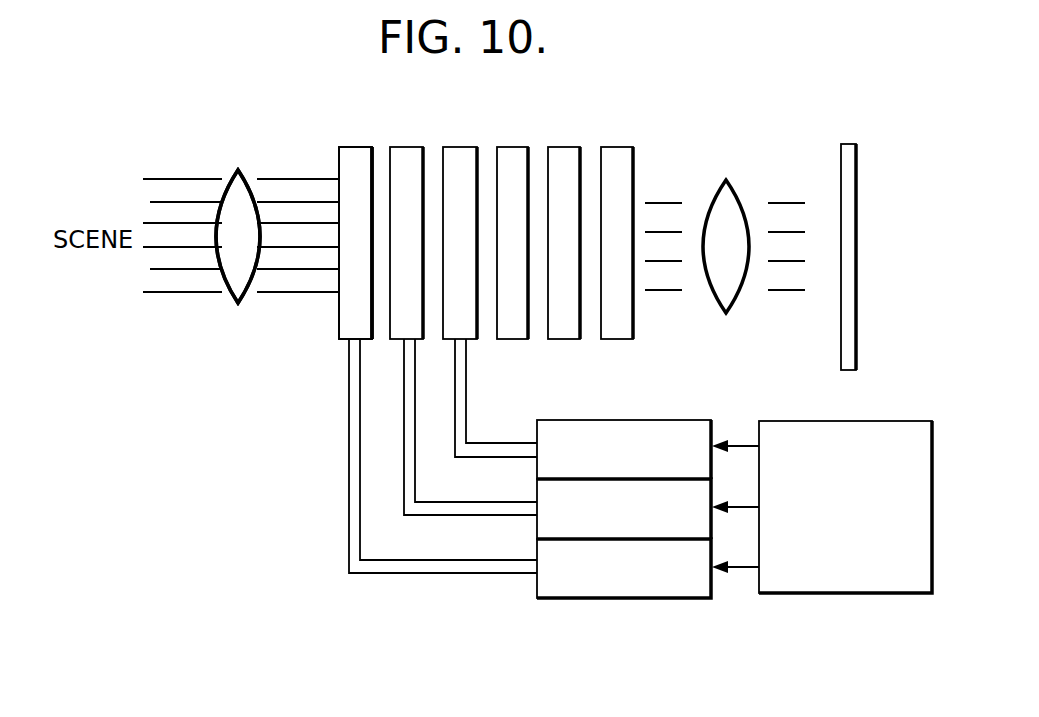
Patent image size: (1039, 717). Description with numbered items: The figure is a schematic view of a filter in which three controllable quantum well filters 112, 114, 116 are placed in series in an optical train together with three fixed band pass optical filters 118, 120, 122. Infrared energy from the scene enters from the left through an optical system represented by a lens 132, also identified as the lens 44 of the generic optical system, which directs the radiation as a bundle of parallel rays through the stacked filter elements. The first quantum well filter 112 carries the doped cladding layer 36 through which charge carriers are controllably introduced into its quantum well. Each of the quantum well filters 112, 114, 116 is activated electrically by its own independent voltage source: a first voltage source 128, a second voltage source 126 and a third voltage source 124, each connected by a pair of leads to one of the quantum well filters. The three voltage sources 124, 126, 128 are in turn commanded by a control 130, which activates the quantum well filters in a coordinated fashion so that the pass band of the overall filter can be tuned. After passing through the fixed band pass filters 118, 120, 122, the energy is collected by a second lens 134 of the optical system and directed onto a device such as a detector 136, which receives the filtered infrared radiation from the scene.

The lens 132 is at (239, 170).
The lens 44 is at (240, 304).
The first doped cladding layer 36 is at (338, 325).
The controllable quantum well filter 112 is at (369, 145).
The controllable quantum well filter 114 is at (420, 145).
The controllable quantum well filter 116 is at (477, 145).
The fixed band pass optical filter 118 is at (527, 145).
The fixed band pass optical filter 120 is at (580, 145).
The fixed band pass optical filter 122 is at (632, 145).
The lens 134 is at (730, 178).
The detector 136 is at (842, 144).
The voltage source 128 is at (711, 420).
The voltage source 126 is at (558, 522).
The voltage source 124 is at (690, 583).
The control 130 is at (932, 421).